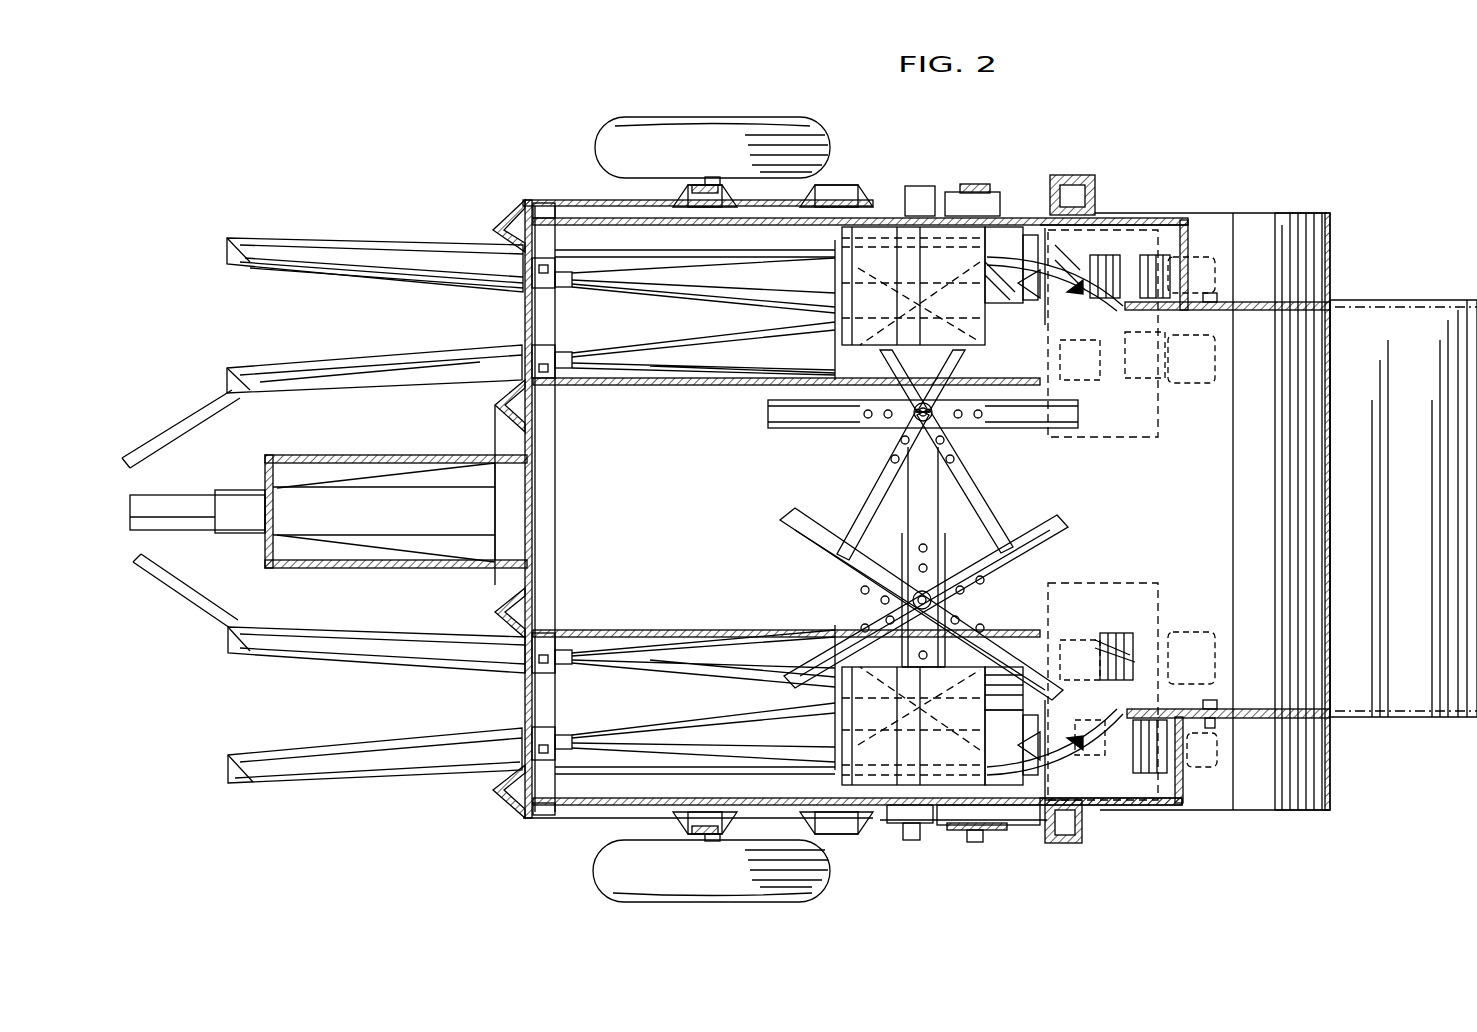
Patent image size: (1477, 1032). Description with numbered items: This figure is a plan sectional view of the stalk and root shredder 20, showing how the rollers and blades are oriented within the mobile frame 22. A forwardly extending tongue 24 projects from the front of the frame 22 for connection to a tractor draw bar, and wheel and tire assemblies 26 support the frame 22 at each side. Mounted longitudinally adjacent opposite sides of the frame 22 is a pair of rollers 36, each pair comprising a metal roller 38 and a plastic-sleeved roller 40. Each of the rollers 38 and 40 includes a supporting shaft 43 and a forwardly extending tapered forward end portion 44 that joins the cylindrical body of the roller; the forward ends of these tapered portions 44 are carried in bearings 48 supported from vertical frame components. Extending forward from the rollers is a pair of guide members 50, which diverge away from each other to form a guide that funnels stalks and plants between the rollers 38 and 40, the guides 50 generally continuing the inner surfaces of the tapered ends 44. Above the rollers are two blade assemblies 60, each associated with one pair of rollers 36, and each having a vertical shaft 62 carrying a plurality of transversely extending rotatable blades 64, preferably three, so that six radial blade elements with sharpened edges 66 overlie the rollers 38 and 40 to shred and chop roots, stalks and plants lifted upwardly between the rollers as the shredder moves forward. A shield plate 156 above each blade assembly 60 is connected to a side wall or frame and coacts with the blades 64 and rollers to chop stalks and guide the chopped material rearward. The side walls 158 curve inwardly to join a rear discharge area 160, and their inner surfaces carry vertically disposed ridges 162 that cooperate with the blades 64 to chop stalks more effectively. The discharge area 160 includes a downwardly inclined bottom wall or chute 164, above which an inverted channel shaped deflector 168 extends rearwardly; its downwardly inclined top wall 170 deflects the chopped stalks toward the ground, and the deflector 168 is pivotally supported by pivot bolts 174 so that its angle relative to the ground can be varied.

The stalk and root shredder 20 is at (1170, 212).
The mobile frame 22 is at (605, 802).
The tongue 24 is at (170, 505).
The wheel and tire assemblies 26 is at (832, 870).
The pair of rollers 36 is at (712, 683).
The metal roller 38 is at (1010, 715).
The roller 40 is at (1000, 635).
The supporting shaft 43 is at (572, 365).
The tapered forward end portion 44 is at (677, 282).
The bearings 48 is at (545, 280).
The guide members 50 is at (420, 657).
The blade assemblies 60 is at (802, 432).
The vertical shaft 62 is at (878, 435).
The rotatable blades 64 is at (975, 496).
The sharpened edges 66 is at (1005, 508).
The shield plate 156 is at (968, 262).
The side walls 158 is at (1063, 275).
The rear discharge area 160 is at (1205, 484).
The ridges 162 is at (1068, 290).
The bottom wall or chute 164 is at (1305, 765).
The deflector 168 is at (1318, 300).
The top wall 170 is at (1420, 596).
The pivot bolts 174 is at (1213, 740).